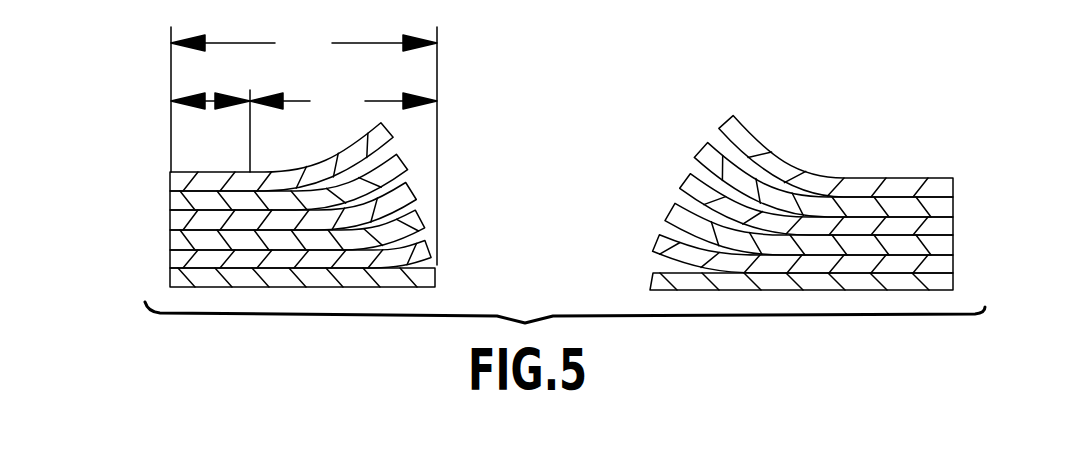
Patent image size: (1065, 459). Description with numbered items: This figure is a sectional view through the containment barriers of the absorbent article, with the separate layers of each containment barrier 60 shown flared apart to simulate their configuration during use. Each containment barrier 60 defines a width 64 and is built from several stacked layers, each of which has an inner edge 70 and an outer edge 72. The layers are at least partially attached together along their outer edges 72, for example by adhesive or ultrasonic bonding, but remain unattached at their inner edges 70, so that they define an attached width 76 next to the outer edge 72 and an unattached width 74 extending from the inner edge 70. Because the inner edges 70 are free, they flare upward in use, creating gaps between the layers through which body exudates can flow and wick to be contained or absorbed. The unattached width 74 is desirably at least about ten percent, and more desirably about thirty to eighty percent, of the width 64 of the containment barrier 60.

The containment barrier 60 is at (897, 64).
The width 64 is at (304, 146).
The inner edge 70 is at (432, 220).
The outer edge 72 is at (170, 203).
The unattached width 74 is at (343, 130).
The attached width 76 is at (210, 101).